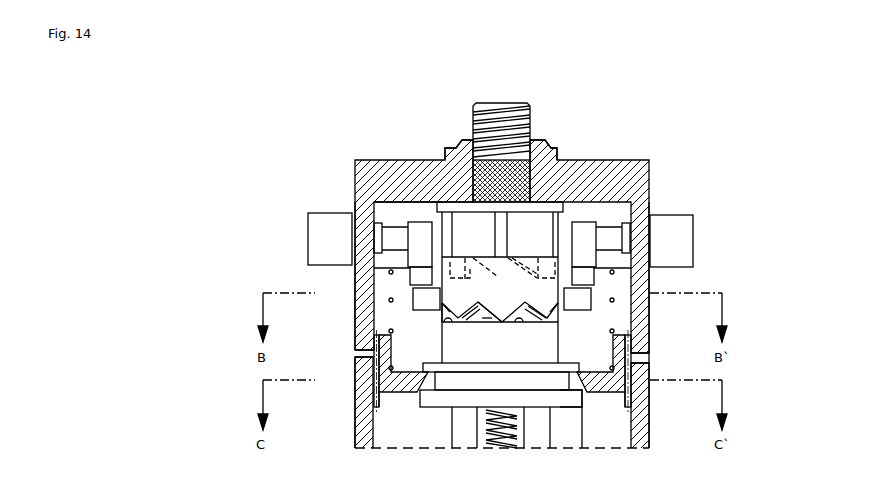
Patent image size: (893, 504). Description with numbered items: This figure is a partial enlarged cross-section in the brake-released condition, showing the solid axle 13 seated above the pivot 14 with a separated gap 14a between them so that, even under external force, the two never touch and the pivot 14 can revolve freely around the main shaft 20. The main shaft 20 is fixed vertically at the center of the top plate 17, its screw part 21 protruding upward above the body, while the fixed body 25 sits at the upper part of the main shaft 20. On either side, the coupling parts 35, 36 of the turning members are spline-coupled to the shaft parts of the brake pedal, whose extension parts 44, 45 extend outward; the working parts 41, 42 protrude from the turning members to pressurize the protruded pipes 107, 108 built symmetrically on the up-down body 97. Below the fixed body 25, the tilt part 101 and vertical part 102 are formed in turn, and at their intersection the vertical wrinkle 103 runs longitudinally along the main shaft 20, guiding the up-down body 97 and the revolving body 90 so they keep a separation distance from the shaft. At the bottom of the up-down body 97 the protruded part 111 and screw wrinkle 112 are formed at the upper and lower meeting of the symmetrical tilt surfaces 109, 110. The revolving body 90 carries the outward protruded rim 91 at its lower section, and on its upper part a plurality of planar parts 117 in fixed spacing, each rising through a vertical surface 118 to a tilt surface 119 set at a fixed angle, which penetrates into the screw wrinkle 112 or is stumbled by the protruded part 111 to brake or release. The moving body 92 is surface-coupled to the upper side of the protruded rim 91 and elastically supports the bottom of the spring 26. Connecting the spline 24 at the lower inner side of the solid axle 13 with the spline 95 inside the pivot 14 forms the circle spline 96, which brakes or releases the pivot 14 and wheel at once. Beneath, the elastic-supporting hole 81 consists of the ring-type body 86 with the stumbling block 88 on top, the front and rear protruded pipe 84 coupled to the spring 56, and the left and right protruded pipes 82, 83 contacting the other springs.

The solid axle 13 is at (363, 268).
The pivot 14 is at (360, 428).
The separated gap 14a is at (636, 353).
The top plate 17 is at (430, 160).
The main shaft 20 is at (518, 161).
The screw part 21 is at (504, 110).
The spline 24 is at (370, 309).
The fixed body 25 is at (543, 212).
The spring 26 is at (614, 303).
The coupling part 35 is at (390, 232).
The coupling part 36 is at (618, 230).
The working part 41 is at (415, 277).
The working part 42 is at (598, 283).
The extension part 44 is at (312, 237).
The extension part 45 is at (690, 241).
The spring 56 is at (508, 447).
The elastic-supporting hole 81 is at (567, 408).
The protruded pipe 82 is at (456, 452).
The protruded pipe 83 is at (541, 450).
The protruded pipe 84 is at (492, 445).
The body 86 is at (576, 404).
The stumbling block 88 is at (455, 380).
The revolving body 90 is at (425, 365).
The protruded rim 91 is at (473, 365).
The moving body 92 is at (360, 358).
The spline 95 is at (368, 395).
The circle spline 96 is at (374, 380).
The up-down body 97 is at (447, 267).
The tilt part 101 is at (514, 258).
The vertical part 102 is at (464, 256).
The vertical wrinkle 103 is at (503, 224).
The protruded pipe 107 is at (412, 298).
The protruded pipe 108 is at (576, 306).
The tilt surface 109 is at (510, 322).
The tilt surface 110 is at (543, 313).
The protruded part 111 is at (500, 316).
The screw wrinkle 112 is at (504, 301).
The planar part 117 is at (442, 317).
The vertical surface 118 is at (478, 321).
The tilt surface 119 is at (488, 322).